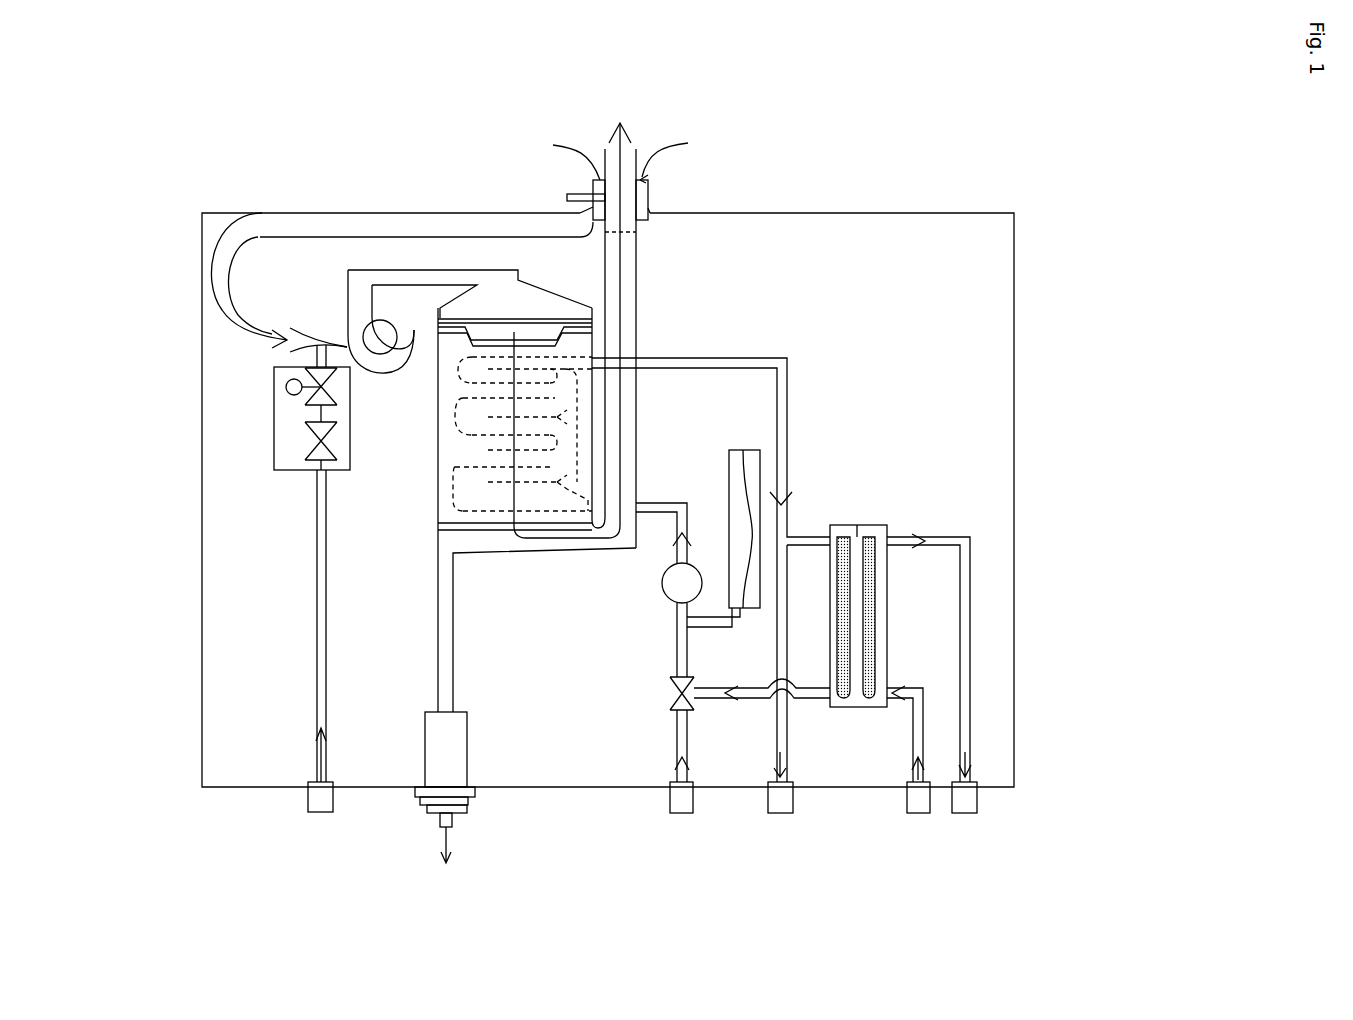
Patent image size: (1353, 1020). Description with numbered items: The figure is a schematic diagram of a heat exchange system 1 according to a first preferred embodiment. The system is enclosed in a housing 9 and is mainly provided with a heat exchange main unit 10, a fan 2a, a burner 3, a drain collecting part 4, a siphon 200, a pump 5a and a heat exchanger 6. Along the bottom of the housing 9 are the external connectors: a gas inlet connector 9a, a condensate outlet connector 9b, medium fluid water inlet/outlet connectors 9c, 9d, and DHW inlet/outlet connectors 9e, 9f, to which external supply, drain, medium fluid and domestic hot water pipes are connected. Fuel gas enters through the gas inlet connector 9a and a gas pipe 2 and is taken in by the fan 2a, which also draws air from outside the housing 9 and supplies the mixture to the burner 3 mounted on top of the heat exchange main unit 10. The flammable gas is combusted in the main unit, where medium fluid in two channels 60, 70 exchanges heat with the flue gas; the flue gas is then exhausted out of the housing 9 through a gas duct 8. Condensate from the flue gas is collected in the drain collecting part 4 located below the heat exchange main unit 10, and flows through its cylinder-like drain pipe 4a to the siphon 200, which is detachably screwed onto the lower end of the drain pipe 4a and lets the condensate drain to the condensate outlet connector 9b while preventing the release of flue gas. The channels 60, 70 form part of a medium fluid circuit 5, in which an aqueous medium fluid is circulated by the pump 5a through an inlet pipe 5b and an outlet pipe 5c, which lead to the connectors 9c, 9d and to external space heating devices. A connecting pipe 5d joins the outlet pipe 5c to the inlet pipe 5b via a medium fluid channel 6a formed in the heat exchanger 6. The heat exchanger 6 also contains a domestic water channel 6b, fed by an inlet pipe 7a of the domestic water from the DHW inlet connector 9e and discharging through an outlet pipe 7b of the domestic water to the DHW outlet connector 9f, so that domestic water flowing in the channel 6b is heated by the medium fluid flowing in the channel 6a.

The heat exchange system 1 is at (1098, 202).
The gas pipe 2 is at (317, 625).
The fan 2a is at (380, 373).
The burner 3 is at (600, 327).
The drain collecting part 4 is at (527, 560).
The drain pipe 4a is at (453, 660).
The medium fluid circuit 5 is at (790, 390).
The pump 5a is at (662, 583).
The inlet pipe 5b is at (673, 716).
The outlet pipe 5c is at (770, 418).
The connecting pipe 5d is at (813, 530).
The heat exchanger 6 is at (851, 613).
The medium fluid channel 6a is at (838, 708).
The domestic water channel 6b is at (870, 708).
The inlet pipe of the domestic water 7a is at (913, 686).
The outlet pipe of the domestic water 7b is at (943, 535).
The gas duct 8 is at (638, 263).
The housing 9 is at (1030, 360).
The gas inlet connector 9a is at (308, 796).
The condensate outlet connector 9b is at (440, 820).
The medium fluid water inlet connector 9c is at (670, 800).
The medium fluid water outlet connector 9d is at (768, 800).
The DHW inlet connector 9e is at (907, 800).
The DHW outlet connector 9f is at (977, 800).
The heat exchange main unit 10 is at (438, 532).
The channel 60 is at (410, 510).
The channel 70 is at (390, 480).
The siphon 200 is at (468, 752).